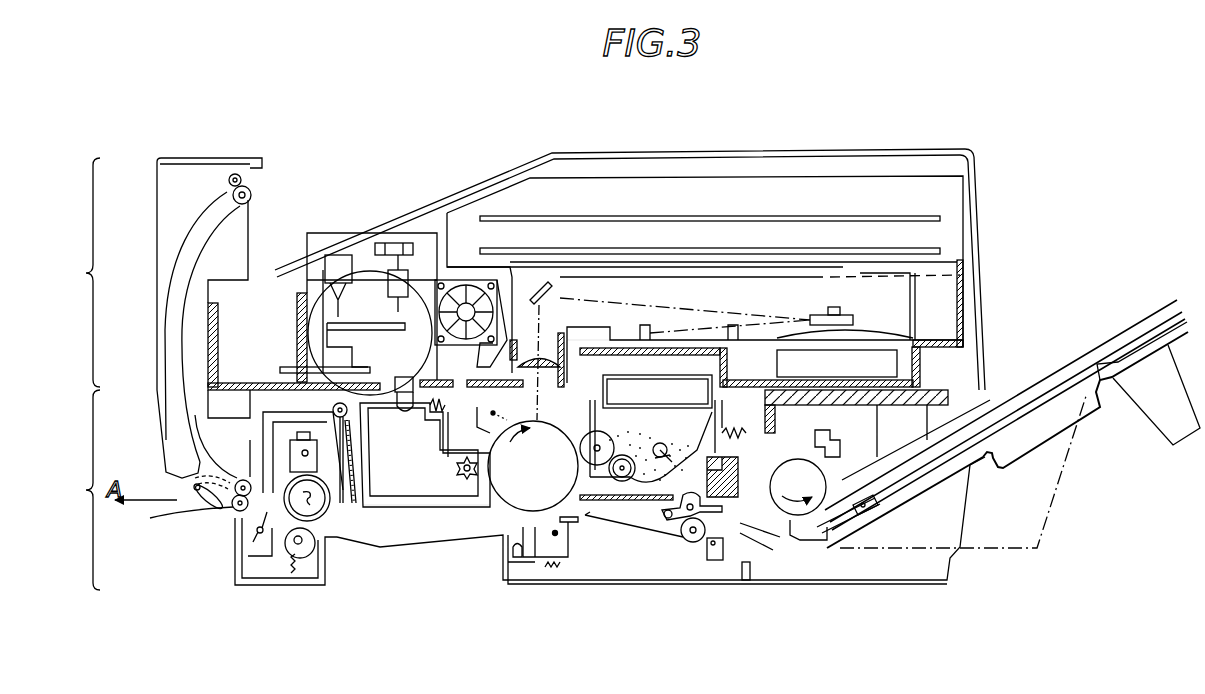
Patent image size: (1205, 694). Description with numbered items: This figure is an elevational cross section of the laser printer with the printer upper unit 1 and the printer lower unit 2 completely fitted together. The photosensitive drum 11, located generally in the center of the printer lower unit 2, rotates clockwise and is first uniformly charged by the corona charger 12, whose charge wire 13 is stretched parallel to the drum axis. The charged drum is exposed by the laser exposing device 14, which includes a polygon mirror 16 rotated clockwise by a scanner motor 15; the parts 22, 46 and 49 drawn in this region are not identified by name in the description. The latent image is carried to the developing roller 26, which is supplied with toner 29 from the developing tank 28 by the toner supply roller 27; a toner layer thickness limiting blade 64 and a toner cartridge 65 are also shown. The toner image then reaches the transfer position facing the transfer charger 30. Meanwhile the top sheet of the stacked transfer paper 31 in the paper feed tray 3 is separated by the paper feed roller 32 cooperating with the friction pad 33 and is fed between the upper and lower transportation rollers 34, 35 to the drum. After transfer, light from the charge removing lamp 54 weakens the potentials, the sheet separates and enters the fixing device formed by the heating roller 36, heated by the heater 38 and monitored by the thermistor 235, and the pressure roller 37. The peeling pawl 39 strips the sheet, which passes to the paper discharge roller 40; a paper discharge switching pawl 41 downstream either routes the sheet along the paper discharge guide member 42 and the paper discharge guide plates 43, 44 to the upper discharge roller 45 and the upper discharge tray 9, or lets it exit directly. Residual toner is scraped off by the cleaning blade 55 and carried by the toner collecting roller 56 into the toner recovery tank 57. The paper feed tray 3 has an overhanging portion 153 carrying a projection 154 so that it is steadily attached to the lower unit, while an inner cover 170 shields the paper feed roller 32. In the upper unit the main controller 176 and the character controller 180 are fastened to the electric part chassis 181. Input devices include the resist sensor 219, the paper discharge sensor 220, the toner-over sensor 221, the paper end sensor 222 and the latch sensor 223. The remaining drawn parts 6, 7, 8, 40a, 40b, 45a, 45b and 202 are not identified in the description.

The printer upper unit 1 is at (79, 272).
The printer lower unit 2 is at (79, 490).
The paper feed tray 3 is at (1092, 323).
The outer cover wall 6 is at (977, 195).
The inner cover wall 7 is at (975, 218).
The upper housing 8 is at (722, 150).
The upper discharge tray 9 is at (388, 200).
The photosensitive drum 11 is at (527, 488).
The corona charger 12 is at (425, 453).
The charge wire 13 is at (493, 413).
The laser exposing device 14 is at (767, 303).
The scanner motor 15 is at (777, 367).
The polygon mirror 16 is at (857, 322).
The reflecting mirror 22 is at (545, 340).
The developing roller 26 is at (603, 478).
The toner supply roller 27 is at (632, 482).
The developing tank 28 is at (687, 432).
The toner 29 is at (649, 450).
The transfer charger 30 is at (567, 547).
The stacked sheets of transfer paper 31 is at (1085, 360).
The paper feed roller 32 is at (790, 472).
The friction pad 33 is at (798, 537).
The upper transportation roller 34 is at (683, 495).
The lower transportation roller 35 is at (693, 542).
The heating roller 36 is at (290, 483).
The pressure roller 37 is at (307, 548).
The heater 38 is at (310, 507).
The peeling pawl 39 is at (293, 550).
The paper discharge roller 40 is at (218, 520).
The flag arm 40a is at (233, 480).
The flag arm 40b is at (207, 508).
The paper discharge switching pawl 41 is at (179, 520).
The paper discharge guide member 42 is at (228, 250).
The paper discharge guide plate 43 is at (162, 243).
The paper discharge guide plate 44 is at (167, 423).
The upper discharge roller 45 is at (260, 176).
The drive roller 45a is at (253, 195).
The pinch roller 45b is at (233, 177).
The cooling fan 46 is at (465, 280).
The laser scanner unit 49 is at (295, 280).
The charge removing lamp 54 is at (517, 557).
The cleaning blade 55 is at (477, 483).
The toner collecting roller 56 is at (460, 473).
The toner recovery tank 57 is at (417, 472).
The toner layer thickness limiting blade 64 is at (615, 410).
The toner cartridge 65 is at (675, 387).
The overhanging portion 153 is at (1058, 485).
The projection 154 is at (1163, 410).
The inner cover 170 is at (943, 387).
The main controller 176 is at (600, 215).
The character controller 180 is at (710, 247).
The electric part chassis 181 is at (890, 190).
The spring 202 is at (553, 568).
The resist sensor 219 is at (722, 543).
The paper discharge sensor 220 is at (257, 535).
The toner-over sensor 221 is at (400, 392).
The paper end sensor 222 is at (827, 500).
The latch sensor 223 is at (413, 243).
The thermistor 235 is at (305, 472).